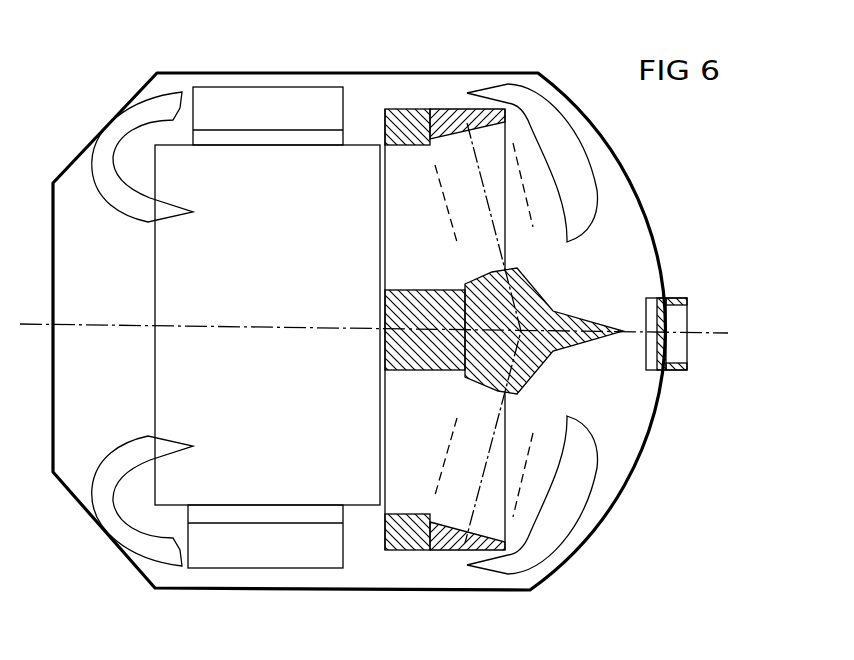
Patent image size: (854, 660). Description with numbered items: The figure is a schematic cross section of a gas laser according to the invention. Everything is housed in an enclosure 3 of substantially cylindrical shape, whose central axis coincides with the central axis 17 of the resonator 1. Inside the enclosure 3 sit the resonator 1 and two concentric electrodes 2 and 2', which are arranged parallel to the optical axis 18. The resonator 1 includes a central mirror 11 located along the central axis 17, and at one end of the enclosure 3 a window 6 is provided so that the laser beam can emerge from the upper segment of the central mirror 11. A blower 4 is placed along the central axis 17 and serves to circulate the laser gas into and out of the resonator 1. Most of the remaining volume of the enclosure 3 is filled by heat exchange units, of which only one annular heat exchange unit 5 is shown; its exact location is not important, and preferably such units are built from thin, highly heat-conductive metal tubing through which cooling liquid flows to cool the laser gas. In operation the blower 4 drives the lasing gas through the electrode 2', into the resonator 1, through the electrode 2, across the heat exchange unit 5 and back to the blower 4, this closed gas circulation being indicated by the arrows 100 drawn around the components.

The resonator 1 is at (603, 280).
The electrode 2 is at (477, 329).
The electrode 2' is at (446, 330).
The enclosure 3 is at (648, 453).
The blower 4 is at (173, 288).
The annular heat exchange unit 5 is at (258, 552).
The window 6 is at (670, 322).
The central mirror 11 is at (536, 352).
The central axis 17 is at (231, 324).
The optical axis 18 is at (493, 430).
The arrows 100 is at (152, 97).